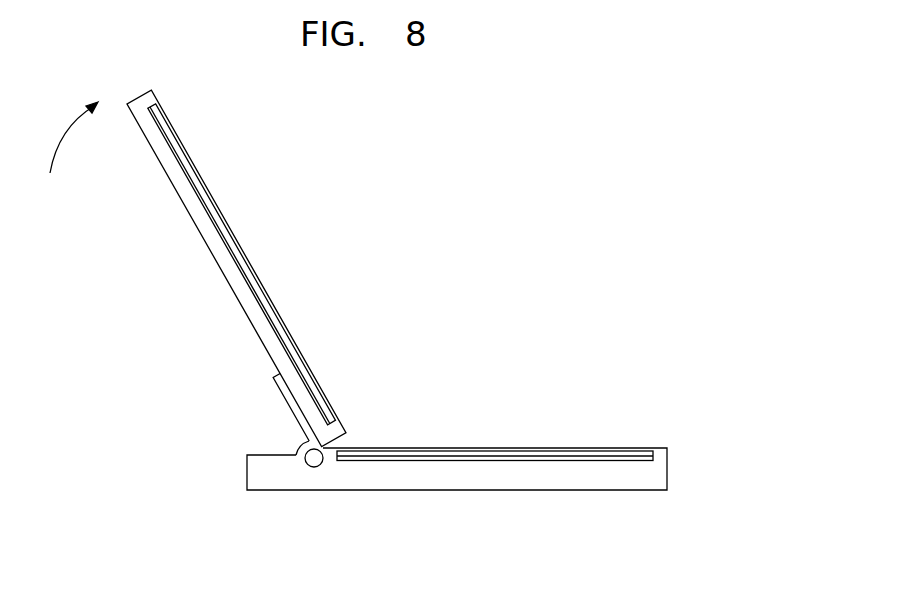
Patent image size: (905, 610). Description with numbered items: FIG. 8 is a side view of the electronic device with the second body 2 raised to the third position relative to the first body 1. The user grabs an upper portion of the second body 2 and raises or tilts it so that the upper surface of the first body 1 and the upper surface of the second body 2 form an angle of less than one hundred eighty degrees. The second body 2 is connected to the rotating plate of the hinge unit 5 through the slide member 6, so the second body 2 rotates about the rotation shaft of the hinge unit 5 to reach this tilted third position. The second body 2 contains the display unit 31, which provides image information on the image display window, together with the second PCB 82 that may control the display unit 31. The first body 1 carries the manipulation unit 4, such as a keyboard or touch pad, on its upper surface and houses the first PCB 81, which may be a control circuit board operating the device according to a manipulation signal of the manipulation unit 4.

The first body 1 is at (668, 471).
The second body 2 is at (180, 213).
The manipulation unit 4 is at (438, 450).
The hinge unit 5 is at (315, 468).
The slide member 6 is at (280, 392).
The display unit 31 is at (231, 223).
The first printed circuit board 81 is at (591, 455).
The second printed circuit board 82 is at (238, 273).